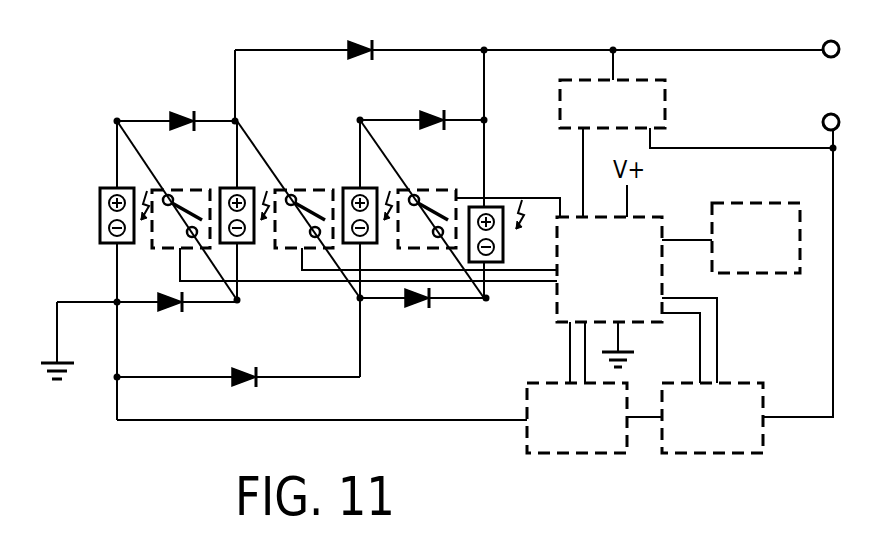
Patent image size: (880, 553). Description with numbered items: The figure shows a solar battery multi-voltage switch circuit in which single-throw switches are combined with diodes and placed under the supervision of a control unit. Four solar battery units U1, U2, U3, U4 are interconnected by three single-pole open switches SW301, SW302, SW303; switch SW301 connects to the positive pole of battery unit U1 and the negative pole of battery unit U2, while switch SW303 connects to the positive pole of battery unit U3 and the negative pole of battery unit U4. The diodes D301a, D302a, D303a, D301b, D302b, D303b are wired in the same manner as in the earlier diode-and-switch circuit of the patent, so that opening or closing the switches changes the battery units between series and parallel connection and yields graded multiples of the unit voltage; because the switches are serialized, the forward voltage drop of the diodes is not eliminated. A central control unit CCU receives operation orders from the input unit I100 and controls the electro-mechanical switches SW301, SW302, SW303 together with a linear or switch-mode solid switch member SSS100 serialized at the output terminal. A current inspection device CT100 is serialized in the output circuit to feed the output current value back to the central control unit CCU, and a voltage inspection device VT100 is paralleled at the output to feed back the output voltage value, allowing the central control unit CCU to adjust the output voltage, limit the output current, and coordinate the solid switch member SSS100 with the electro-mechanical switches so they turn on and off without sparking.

The diode D301a is at (372, 34).
The diode D302a is at (189, 105).
The diode D303a is at (436, 104).
The diode D301b is at (239, 391).
The diode D302b is at (177, 319).
The diode D303b is at (419, 316).
The single-pole open switch SW301 is at (313, 202).
The single-pole open switch SW302 is at (191, 202).
The single-pole open switch SW303 is at (438, 202).
The battery unit U1 is at (113, 229).
The battery unit U2 is at (246, 229).
The battery unit U3 is at (368, 229).
The battery unit U4 is at (504, 231).
The voltage inspection device VT100 is at (612, 104).
The central control unit CCU is at (609, 269).
The input unit I100 is at (756, 238).
The current inspection device CT100 is at (577, 418).
The solid switch member SSS100 is at (712, 418).